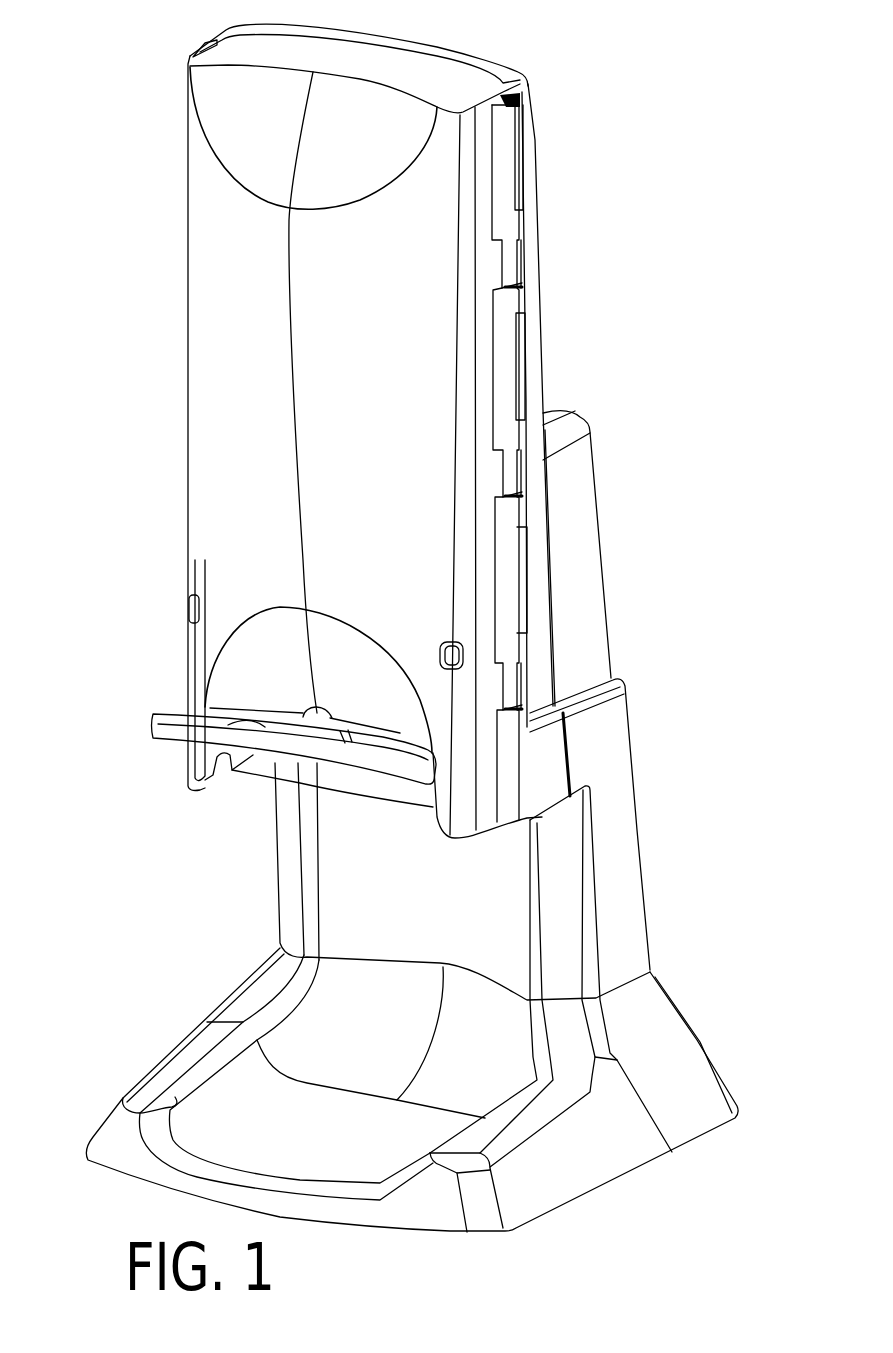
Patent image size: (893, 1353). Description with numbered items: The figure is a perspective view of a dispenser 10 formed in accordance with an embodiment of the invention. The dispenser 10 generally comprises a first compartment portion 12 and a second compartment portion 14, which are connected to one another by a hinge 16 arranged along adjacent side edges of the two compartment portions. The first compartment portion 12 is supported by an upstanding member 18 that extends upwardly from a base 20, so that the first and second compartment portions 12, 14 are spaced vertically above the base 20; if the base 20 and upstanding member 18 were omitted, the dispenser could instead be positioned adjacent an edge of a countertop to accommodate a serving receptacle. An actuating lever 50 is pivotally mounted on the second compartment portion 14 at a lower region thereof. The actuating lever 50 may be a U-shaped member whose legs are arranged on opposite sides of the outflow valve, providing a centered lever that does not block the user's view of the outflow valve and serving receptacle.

The dispenser 10 is at (606, 198).
The first compartment portion 12 is at (543, 373).
The second compartment portion 14 is at (200, 274).
The hinge 16 is at (510, 290).
The upstanding member 18 is at (653, 826).
The base 20 is at (673, 1055).
The actuating lever 50 is at (160, 735).